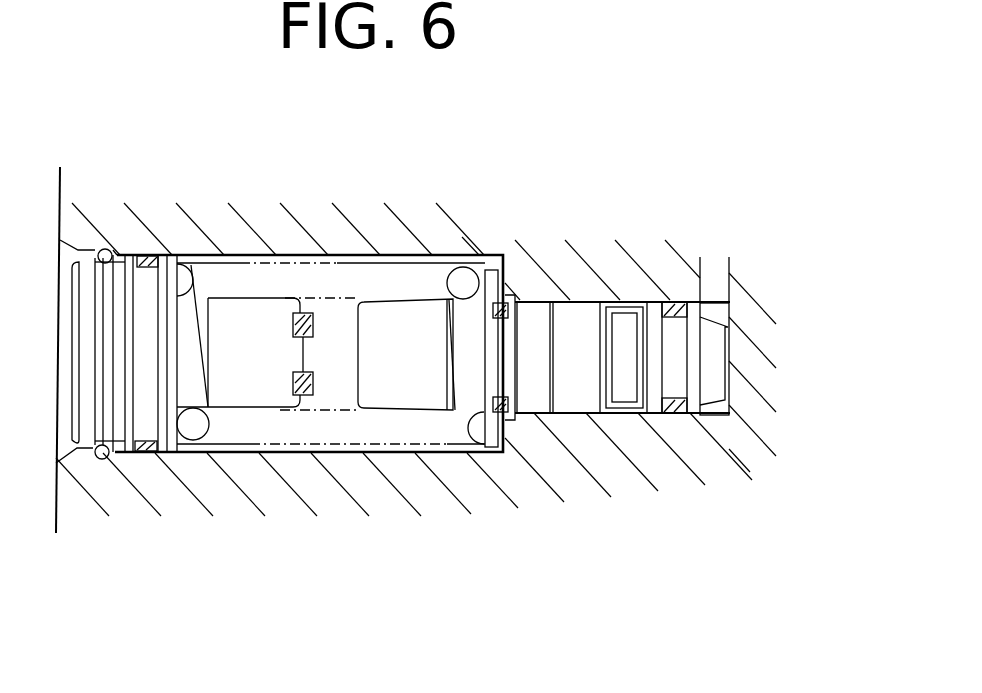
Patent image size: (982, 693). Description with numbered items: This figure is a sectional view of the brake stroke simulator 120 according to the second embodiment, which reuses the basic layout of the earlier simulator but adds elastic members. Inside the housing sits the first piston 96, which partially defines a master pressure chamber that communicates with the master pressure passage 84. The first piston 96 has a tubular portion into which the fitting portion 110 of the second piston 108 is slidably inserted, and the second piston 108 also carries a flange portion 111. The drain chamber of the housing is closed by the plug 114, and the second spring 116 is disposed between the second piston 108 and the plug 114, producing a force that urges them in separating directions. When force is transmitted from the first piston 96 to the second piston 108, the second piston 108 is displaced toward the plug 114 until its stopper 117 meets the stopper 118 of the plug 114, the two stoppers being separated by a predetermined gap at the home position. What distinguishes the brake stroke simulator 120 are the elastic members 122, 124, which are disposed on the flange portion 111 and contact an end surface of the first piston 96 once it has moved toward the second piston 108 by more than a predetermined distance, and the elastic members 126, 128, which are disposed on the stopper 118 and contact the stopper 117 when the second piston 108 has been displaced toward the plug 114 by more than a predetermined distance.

The master pressure passage 84 is at (710, 287).
The first piston 96 is at (580, 393).
The second piston 108 is at (483, 538).
The fitting portion 110 is at (510, 388).
The flange portion 111 is at (492, 425).
The plug 114 is at (241, 384).
The second spring 116 is at (313, 282).
The stopper 117 is at (417, 390).
The stopper 118 is at (232, 332).
The brake stroke simulator 120 is at (420, 232).
The elastic member 122 is at (505, 302).
The elastic member 124 is at (502, 396).
The elastic member 126 is at (316, 398).
The elastic member 128 is at (317, 322).